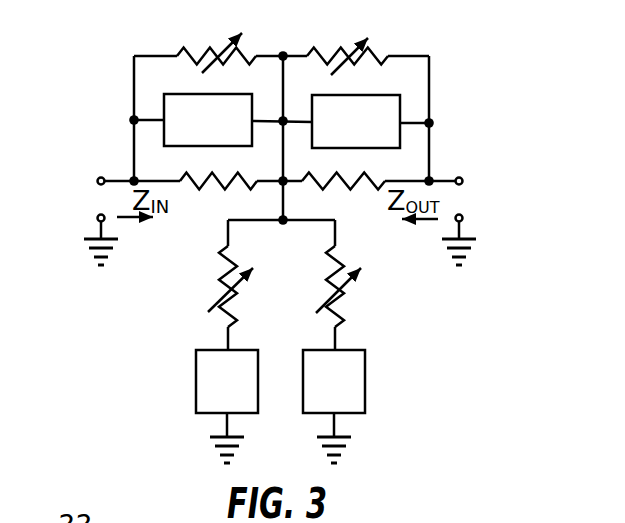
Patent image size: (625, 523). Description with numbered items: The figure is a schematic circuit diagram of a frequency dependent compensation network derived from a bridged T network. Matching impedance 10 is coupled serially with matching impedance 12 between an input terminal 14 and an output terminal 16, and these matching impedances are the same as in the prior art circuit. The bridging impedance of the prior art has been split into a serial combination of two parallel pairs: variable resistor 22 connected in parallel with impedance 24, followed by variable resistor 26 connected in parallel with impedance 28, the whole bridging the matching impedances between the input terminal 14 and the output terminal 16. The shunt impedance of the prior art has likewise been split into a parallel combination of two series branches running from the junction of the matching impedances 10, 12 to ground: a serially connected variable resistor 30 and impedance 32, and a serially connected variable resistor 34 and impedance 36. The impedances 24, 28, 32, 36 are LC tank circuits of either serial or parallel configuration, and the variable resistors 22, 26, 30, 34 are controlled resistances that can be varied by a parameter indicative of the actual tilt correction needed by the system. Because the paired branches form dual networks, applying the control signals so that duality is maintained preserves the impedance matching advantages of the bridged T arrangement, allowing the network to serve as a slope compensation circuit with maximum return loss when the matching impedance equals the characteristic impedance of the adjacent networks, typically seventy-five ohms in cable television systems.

The matching impedance 10 is at (224, 181).
The matching impedance 12 is at (360, 181).
The input terminal 14 is at (99, 177).
The output terminal 16 is at (461, 177).
The variable resistor 22 is at (197, 50).
The impedance 24 is at (164, 99).
The variable resistor 26 is at (381, 52).
The impedance 28 is at (402, 118).
The variable resistor 30 is at (222, 254).
The impedance 32 is at (196, 378).
The variable resistor 34 is at (342, 256).
The impedance 36 is at (365, 378).